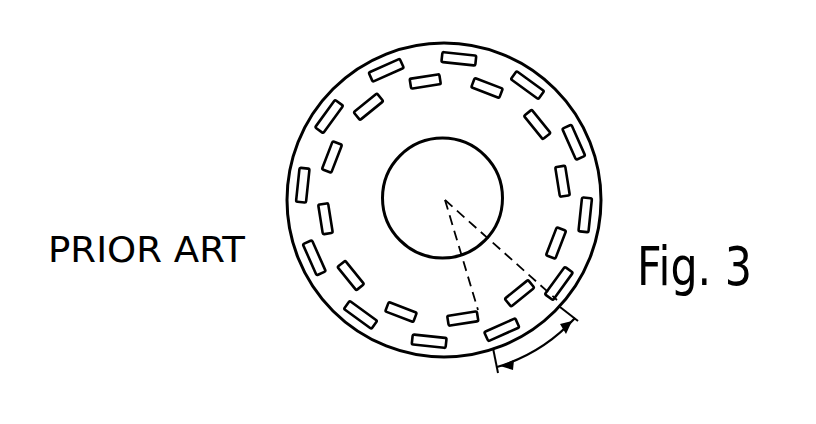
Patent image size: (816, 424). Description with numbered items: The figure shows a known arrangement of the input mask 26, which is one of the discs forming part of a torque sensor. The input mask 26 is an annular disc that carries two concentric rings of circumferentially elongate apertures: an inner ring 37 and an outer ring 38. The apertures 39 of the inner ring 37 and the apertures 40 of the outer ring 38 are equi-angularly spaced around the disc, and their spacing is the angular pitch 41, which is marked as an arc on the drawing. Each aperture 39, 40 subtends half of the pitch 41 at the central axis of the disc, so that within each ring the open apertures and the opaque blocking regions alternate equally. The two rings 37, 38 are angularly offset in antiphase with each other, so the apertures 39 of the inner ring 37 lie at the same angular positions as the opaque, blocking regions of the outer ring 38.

The input mask 26 is at (410, 287).
The inner ring 37 is at (556, 158).
The outer ring 38 is at (476, 42).
The aperture of inner ring 39 is at (492, 83).
The aperture of outer ring 40 is at (528, 88).
The angular pitch 41 is at (541, 345).